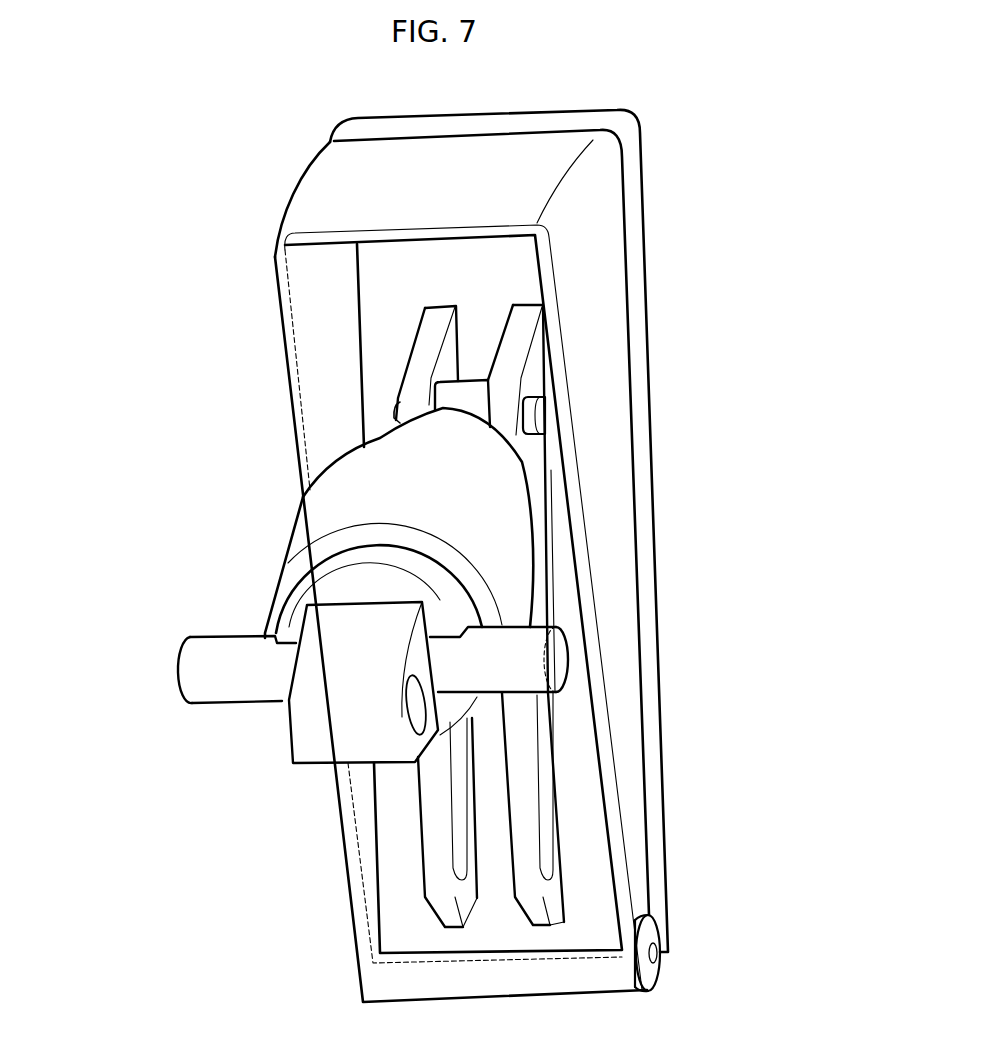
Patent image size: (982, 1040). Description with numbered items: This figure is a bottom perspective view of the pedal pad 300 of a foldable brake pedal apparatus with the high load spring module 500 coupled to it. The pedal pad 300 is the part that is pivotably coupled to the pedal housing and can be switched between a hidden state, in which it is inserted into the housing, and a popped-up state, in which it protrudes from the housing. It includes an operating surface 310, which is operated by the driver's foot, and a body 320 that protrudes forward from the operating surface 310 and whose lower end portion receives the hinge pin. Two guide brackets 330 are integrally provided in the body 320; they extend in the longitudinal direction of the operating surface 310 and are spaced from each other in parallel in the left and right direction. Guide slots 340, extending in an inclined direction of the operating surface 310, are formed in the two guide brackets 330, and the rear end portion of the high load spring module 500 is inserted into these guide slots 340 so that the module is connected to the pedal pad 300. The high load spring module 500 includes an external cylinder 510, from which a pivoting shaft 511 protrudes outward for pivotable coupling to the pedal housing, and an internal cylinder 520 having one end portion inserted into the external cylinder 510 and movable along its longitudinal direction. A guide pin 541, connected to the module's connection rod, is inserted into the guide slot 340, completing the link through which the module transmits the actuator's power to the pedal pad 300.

The pedal pad 300 is at (492, 556).
The operating surface 310 is at (632, 192).
The body 320 is at (325, 193).
The guide brackets 330 is at (517, 318).
The guide slots 340 is at (460, 852).
The high load spring module 500 is at (318, 571).
The external cylinder 510 is at (373, 497).
The pivoting shaft 511 is at (190, 672).
The internal cylinder 520 is at (420, 427).
The guide pin 541 is at (545, 416).